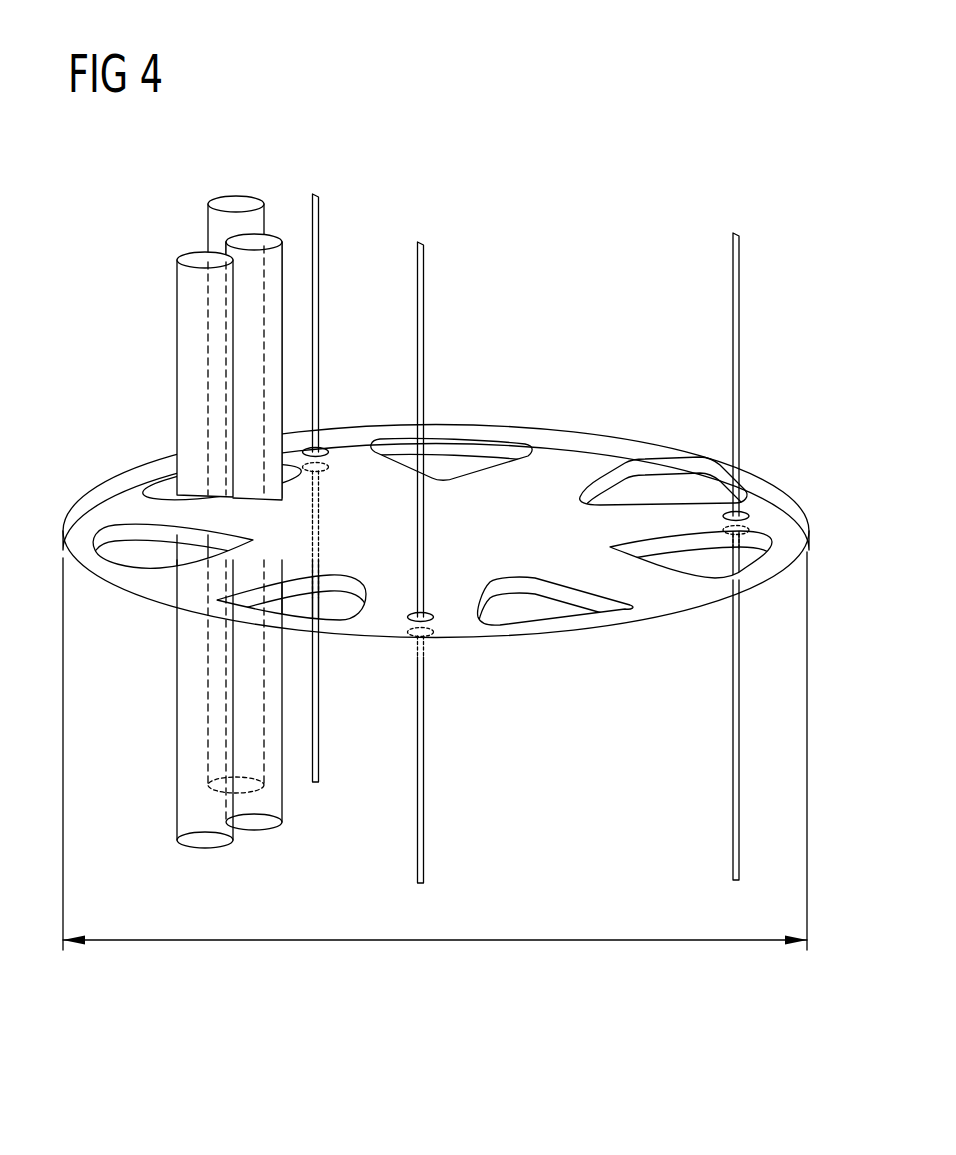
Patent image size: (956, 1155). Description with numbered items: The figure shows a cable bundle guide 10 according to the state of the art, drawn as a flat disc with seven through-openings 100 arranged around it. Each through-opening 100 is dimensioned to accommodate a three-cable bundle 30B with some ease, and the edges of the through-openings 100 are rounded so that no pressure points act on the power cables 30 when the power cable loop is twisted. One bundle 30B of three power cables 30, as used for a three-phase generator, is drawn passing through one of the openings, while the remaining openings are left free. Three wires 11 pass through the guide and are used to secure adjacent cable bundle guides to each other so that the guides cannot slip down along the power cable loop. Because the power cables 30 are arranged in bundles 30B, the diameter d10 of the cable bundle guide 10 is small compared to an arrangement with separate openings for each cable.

The cable bundle guide 10 is at (436, 493).
The through-openings 100 is at (647, 468).
The wires 11 is at (319, 287).
The power cables 30 is at (247, 205).
The cable bundle 30B is at (199, 490).
The diameter of the cable bundle guide d10 is at (435, 751).